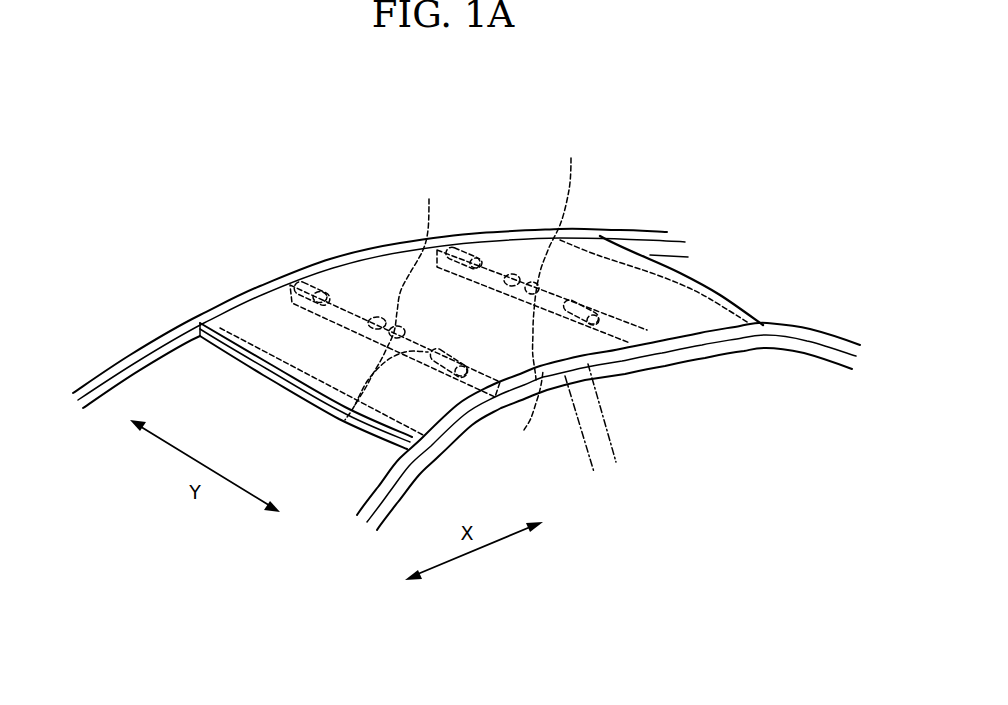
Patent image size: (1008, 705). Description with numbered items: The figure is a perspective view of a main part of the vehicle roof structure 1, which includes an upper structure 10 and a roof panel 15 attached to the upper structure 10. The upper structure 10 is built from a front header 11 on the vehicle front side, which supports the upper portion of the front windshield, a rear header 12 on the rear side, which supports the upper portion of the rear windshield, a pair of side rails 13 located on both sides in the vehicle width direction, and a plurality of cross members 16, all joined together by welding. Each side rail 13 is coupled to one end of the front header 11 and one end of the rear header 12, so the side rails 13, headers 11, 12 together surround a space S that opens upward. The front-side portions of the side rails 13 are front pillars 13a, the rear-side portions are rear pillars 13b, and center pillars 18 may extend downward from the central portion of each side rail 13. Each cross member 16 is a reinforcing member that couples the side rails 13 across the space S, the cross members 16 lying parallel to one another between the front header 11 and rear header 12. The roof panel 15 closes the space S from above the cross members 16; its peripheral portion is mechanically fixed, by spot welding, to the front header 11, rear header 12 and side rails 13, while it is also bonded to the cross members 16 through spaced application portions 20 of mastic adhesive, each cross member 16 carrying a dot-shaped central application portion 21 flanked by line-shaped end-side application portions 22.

The vehicle roof structure 1 is at (137, 158).
The upper structure 10 is at (281, 216).
The front header 11 is at (263, 373).
The rear header 12 is at (700, 288).
The side rail 13 is at (253, 290).
The front pillar 13a is at (122, 366).
The rear pillar 13b is at (626, 231).
The roof panel 15 is at (652, 282).
The cross member 16 is at (337, 427).
The center pillar 18 is at (603, 445).
The application portion 20 is at (303, 303).
The central application portion 21 is at (355, 355).
The end-side application portion 22 is at (282, 322).
The space S is at (440, 262).